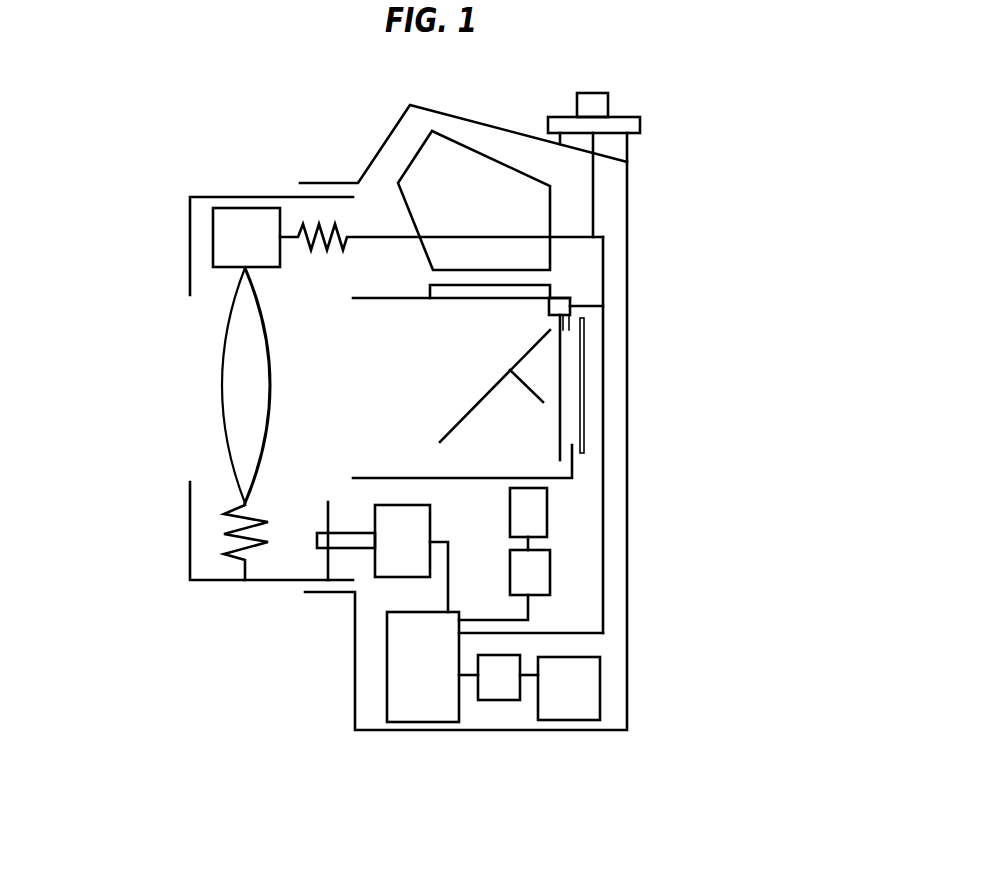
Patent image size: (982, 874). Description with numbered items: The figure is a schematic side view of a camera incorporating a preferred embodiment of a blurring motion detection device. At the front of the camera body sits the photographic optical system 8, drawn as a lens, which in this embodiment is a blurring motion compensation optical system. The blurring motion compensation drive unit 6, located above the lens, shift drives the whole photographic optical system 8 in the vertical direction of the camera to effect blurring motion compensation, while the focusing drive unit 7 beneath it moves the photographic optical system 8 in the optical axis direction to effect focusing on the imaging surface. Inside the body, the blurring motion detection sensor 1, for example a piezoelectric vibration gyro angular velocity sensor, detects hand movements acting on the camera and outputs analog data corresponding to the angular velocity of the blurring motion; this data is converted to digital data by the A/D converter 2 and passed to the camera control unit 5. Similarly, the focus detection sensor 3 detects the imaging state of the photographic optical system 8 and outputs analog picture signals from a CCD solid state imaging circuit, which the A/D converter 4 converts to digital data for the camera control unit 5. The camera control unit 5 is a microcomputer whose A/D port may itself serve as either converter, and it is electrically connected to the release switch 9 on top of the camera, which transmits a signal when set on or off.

The blurring motion detection sensor 1 is at (573, 705).
The A/D converter 2 is at (502, 683).
The focus detection sensor 3 is at (538, 517).
The A/D converter 4 is at (538, 570).
The camera control unit 5 is at (402, 677).
The blurring motion compensation drive unit 6 is at (245, 225).
The focusing drive unit 7 is at (403, 567).
The photographic optical system 8 is at (237, 398).
The release switch 9 is at (600, 105).